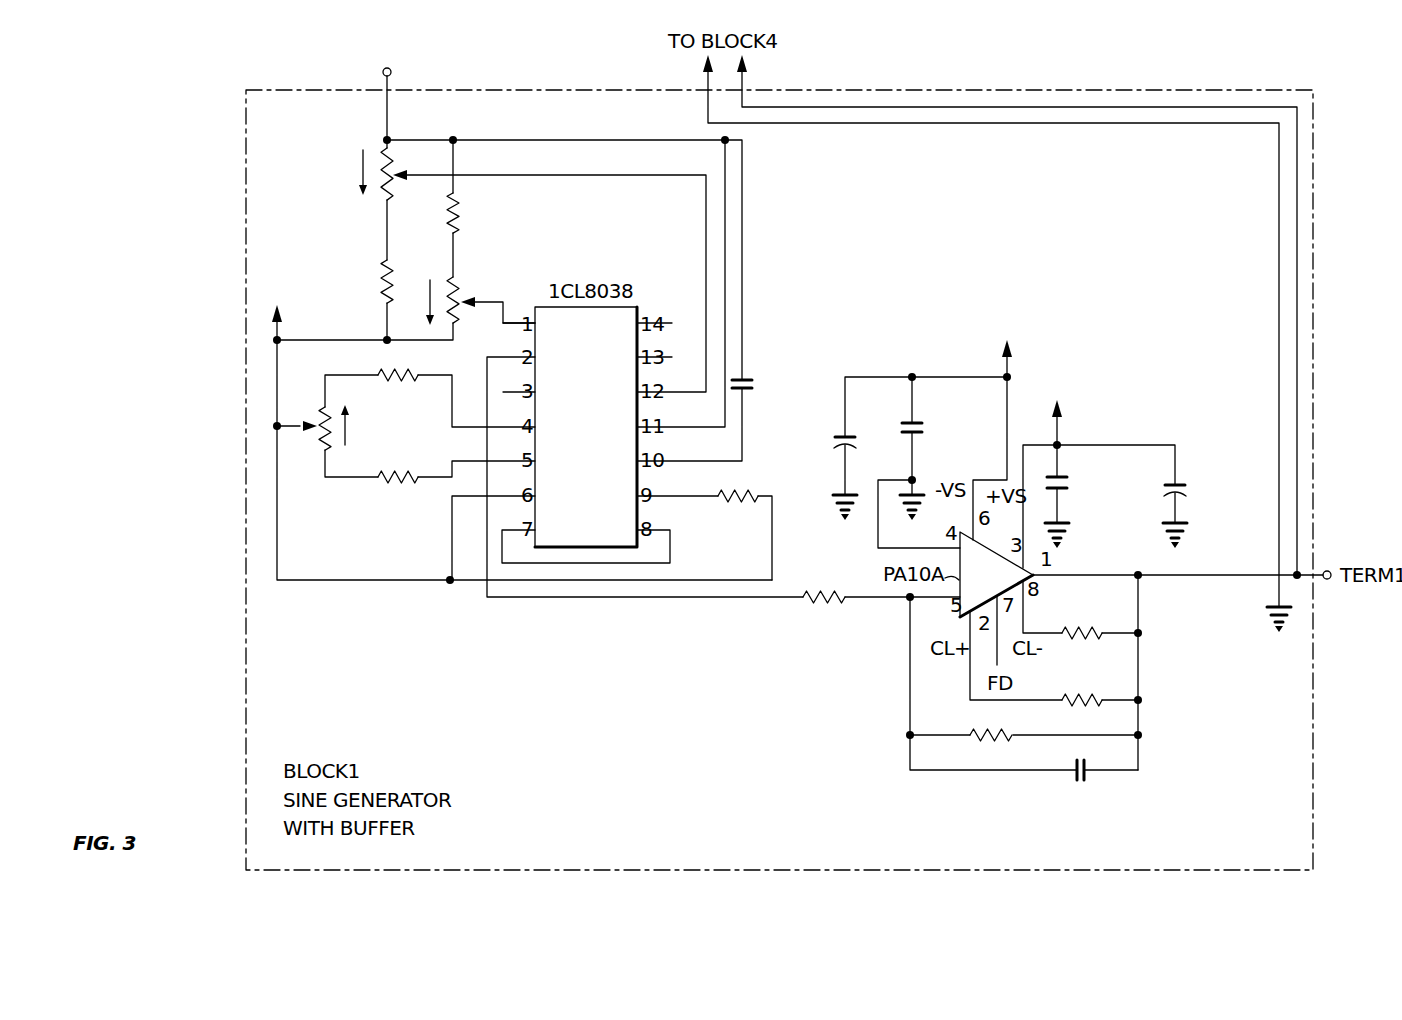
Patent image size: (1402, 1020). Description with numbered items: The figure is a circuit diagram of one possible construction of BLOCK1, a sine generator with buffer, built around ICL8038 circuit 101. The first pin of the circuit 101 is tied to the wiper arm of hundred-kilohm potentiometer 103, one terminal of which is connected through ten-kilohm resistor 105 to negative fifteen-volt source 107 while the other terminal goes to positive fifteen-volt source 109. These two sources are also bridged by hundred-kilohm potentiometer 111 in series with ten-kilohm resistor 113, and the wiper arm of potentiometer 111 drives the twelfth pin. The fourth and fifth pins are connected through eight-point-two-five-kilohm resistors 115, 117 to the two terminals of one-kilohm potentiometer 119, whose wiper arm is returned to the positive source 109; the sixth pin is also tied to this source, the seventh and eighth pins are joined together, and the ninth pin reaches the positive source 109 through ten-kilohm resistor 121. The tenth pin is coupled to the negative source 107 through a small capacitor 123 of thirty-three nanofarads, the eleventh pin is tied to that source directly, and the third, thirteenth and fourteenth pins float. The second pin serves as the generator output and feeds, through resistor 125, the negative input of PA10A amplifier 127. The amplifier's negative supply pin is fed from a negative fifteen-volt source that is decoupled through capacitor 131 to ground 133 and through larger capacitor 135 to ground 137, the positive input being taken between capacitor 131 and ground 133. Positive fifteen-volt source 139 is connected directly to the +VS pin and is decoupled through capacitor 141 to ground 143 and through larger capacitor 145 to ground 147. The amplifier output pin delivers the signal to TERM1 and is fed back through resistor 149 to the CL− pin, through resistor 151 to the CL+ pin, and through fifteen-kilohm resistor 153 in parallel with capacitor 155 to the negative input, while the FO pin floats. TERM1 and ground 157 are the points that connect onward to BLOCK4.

The ICL8038 circuit 101 is at (570, 427).
The 100K potentiometer 103 is at (469, 284).
The 10 kΩ resistor 105 is at (454, 213).
The −15V source 107 is at (415, 62).
The +15V source 109 is at (256, 304).
The 100K potentiometer 111 is at (509, 252).
The 10 kΩ resistor 113 is at (361, 266).
The 8.25 kΩ resistor 115 is at (426, 391).
The 8.25 kΩ resistor 117 is at (376, 505).
The 1K potentiometer 119 is at (313, 412).
The 10 kΩ resistor 121 is at (713, 515).
The 0.033 μF capacitor 123 is at (748, 367).
The 5.11 kΩ resistor 125 is at (820, 613).
The PA10A amplifier 127 is at (1025, 462).
The 0.1 μF capacitor 131 is at (948, 414).
The ground 133 is at (905, 494).
The 8.7 μF capacitor 135 is at (836, 425).
The ground 137 is at (832, 507).
The +15V source 139 is at (1080, 391).
The 0.1 μF capacitor 141 is at (1073, 459).
The ground 143 is at (1087, 535).
The 8.7 μF capacitor 145 is at (1197, 462).
The ground 147 is at (1186, 541).
The resistor 149 is at (1128, 628).
The resistor 151 is at (1128, 695).
The 15 kΩ resistor 153 is at (995, 709).
The 270 pF capacitor 155 is at (1101, 813).
The ground 157 is at (1252, 613).